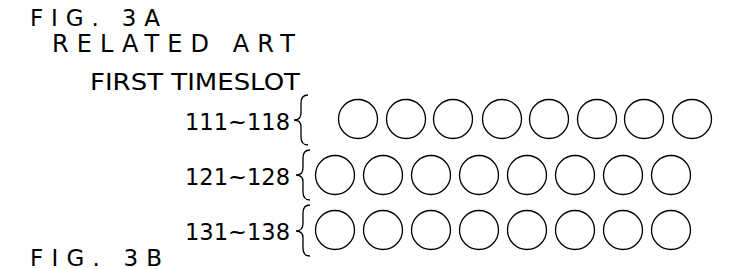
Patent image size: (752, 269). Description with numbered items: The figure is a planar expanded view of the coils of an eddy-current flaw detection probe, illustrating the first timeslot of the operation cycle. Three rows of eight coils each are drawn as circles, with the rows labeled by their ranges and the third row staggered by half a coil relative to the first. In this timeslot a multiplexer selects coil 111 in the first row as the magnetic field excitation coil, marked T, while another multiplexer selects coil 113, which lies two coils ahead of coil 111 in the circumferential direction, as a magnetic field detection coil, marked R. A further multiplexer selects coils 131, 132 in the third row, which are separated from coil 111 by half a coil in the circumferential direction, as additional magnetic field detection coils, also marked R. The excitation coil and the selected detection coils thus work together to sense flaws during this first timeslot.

The coil 111 is at (404, 103).
The coil 113 is at (499, 104).
The coil 131 is at (382, 247).
The coil 132 is at (432, 246).